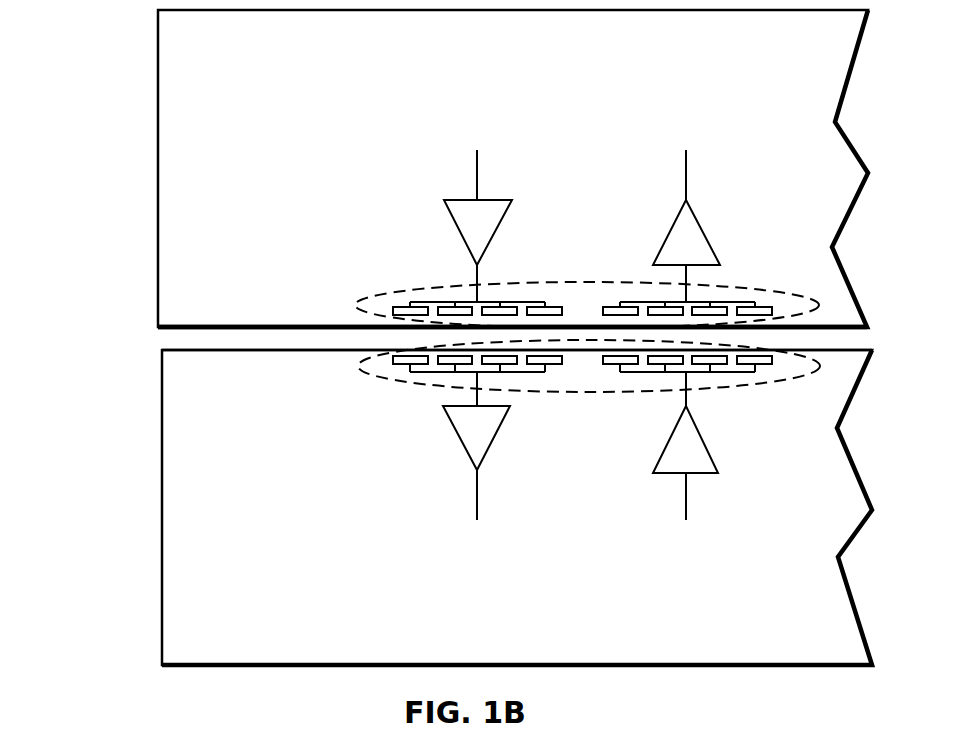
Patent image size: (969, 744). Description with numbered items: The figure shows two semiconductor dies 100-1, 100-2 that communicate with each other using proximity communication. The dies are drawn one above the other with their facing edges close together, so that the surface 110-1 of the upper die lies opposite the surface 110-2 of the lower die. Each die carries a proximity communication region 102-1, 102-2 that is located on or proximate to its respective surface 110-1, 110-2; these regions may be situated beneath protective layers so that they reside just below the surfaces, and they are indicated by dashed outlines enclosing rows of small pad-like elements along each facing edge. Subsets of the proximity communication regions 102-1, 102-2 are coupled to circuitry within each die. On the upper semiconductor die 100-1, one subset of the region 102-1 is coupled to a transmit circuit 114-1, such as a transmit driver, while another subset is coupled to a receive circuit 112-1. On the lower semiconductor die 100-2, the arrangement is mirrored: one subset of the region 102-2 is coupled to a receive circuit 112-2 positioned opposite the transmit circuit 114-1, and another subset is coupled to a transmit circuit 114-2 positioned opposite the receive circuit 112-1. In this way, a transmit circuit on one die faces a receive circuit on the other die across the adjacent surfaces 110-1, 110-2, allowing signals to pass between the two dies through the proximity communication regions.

The semiconductor die 100-1 is at (513, 168).
The semiconductor die 100-2 is at (517, 507).
The surface 110-1 is at (212, 325).
The surface 110-2 is at (210, 352).
The proximity communication region 102-1 is at (405, 290).
The proximity communication region 102-2 is at (367, 377).
The receive circuit 112-1 is at (673, 222).
The receive circuit 112-2 is at (460, 437).
The transmit circuit 114-1 is at (460, 237).
The transmit circuit 114-2 is at (657, 472).